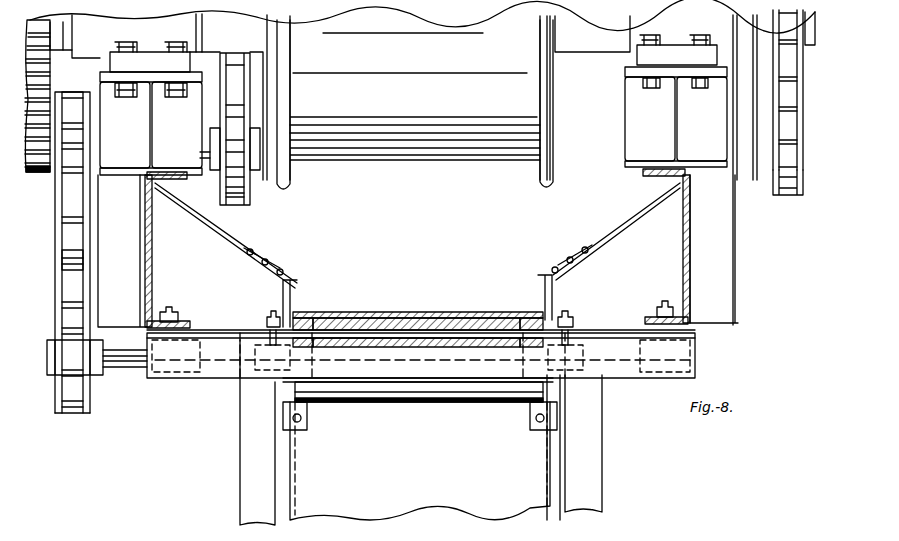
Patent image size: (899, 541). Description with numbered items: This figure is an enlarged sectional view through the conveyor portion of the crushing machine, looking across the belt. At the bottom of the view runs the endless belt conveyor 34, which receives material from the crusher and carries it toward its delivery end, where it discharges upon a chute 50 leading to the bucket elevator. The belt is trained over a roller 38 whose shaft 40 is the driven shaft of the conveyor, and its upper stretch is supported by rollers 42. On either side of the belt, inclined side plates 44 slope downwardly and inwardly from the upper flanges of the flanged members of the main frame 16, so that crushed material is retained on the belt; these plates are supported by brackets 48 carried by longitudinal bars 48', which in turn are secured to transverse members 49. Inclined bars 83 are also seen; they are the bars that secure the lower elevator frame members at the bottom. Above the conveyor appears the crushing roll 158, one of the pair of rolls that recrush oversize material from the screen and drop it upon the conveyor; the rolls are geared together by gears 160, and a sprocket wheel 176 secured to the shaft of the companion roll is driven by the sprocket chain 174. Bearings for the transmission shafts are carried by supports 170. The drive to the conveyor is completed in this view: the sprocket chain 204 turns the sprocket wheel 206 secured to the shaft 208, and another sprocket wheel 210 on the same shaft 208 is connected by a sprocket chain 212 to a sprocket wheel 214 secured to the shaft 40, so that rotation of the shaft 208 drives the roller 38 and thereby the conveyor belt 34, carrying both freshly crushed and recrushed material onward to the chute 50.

The main frame 16 is at (153, 263).
The endless belt conveyor 34 is at (395, 313).
The roller 38 is at (470, 388).
The shaft 40 is at (131, 368).
The rollers 42 is at (458, 325).
The inclined side plates 44 is at (237, 233).
The brackets 48 is at (417, 262).
The longitudinal bars 48' is at (416, 301).
The transverse members 49 is at (622, 372).
The chute 50 is at (540, 483).
The inclined bars 83 is at (245, 478).
The crushing roll 158 is at (373, 130).
The gears 160 is at (44, 178).
The supports 170 is at (128, 292).
The sprocket chain 174 is at (790, 193).
The sprocket wheel 176 is at (762, 40).
The sprocket chain 204 is at (237, 78).
The sprocket wheel 206 is at (252, 194).
The shaft 208 is at (578, 142).
The sprocket wheel 210 is at (77, 97).
The sprocket chain 212 is at (72, 258).
The sprocket wheel 214 is at (60, 414).